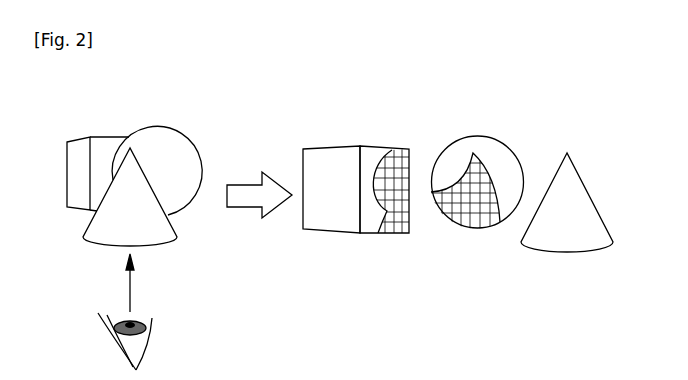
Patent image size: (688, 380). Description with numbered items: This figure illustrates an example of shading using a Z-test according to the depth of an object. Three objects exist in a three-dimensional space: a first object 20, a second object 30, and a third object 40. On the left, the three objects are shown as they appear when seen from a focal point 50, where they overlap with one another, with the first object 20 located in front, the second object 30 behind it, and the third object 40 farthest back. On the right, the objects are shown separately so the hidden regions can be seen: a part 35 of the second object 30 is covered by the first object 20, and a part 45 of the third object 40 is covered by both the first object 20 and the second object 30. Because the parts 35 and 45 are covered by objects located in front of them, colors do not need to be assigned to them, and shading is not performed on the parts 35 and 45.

The first object 20 is at (95, 226).
The second object 30 is at (157, 128).
The part of the second object 35 is at (472, 223).
The third object 40 is at (109, 136).
The part of the third object 45 is at (394, 223).
The focal point 50 is at (112, 341).